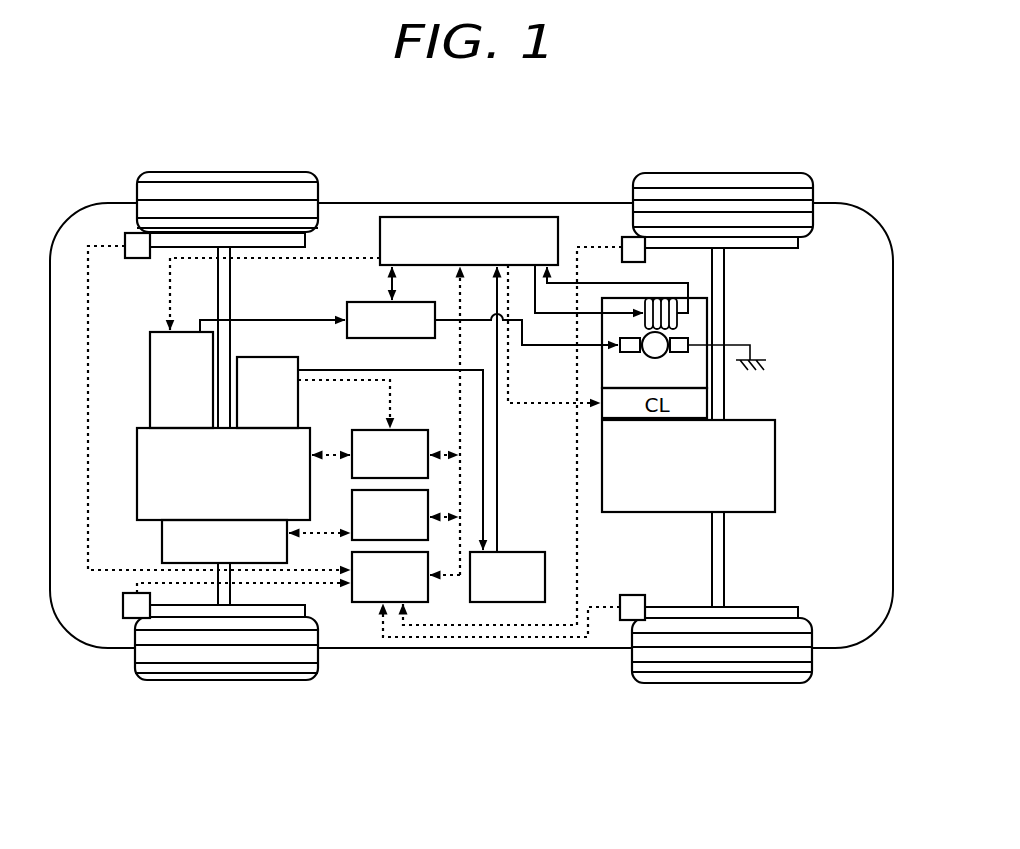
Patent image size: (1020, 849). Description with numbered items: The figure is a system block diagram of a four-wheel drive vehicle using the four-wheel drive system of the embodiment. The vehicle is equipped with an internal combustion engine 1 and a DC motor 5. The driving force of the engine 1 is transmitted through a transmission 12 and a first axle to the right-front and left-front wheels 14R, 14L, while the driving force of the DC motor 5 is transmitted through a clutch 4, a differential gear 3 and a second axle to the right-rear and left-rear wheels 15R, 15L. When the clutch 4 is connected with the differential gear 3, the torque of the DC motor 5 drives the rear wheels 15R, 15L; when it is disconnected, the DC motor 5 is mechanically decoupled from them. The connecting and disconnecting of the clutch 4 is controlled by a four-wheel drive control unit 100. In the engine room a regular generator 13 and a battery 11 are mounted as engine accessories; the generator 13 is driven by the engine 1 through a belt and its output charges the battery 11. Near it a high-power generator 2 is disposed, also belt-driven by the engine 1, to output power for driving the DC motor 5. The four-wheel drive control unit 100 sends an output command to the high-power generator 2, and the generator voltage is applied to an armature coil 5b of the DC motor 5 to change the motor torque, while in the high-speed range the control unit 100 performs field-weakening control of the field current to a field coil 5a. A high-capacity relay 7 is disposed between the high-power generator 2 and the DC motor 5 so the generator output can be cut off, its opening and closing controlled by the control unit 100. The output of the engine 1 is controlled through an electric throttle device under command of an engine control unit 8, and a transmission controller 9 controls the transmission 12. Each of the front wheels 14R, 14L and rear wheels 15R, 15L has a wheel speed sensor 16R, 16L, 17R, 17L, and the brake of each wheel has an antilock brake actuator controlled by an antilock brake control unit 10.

The internal combustion engine 1 is at (137, 468).
The high-power generator 2 is at (150, 370).
The differential gear 3 is at (775, 462).
The clutch 4 is at (725, 400).
The DC motor 5 is at (705, 329).
The field coil 5a is at (677, 315).
The armature coil 5b is at (690, 340).
The high-capacity relay 7 is at (402, 302).
The engine control unit 8 is at (400, 430).
The transmission controller 9 is at (352, 506).
The antilock brake control unit 10 is at (375, 603).
The battery 11 is at (516, 552).
The transmission 12 is at (162, 541).
The regular generator 13 is at (257, 357).
The right-front wheel 14R is at (225, 172).
The left-front wheel 14L is at (252, 681).
The right-rear wheel 15R is at (722, 173).
The left-rear wheel 15L is at (740, 683).
The wheel speed sensor 16R is at (130, 232).
The wheel speed sensor 16L is at (130, 619).
The wheel speed sensor 17R is at (625, 237).
The wheel speed sensor 17L is at (623, 621).
The four-wheel drive control unit 100 is at (472, 217).